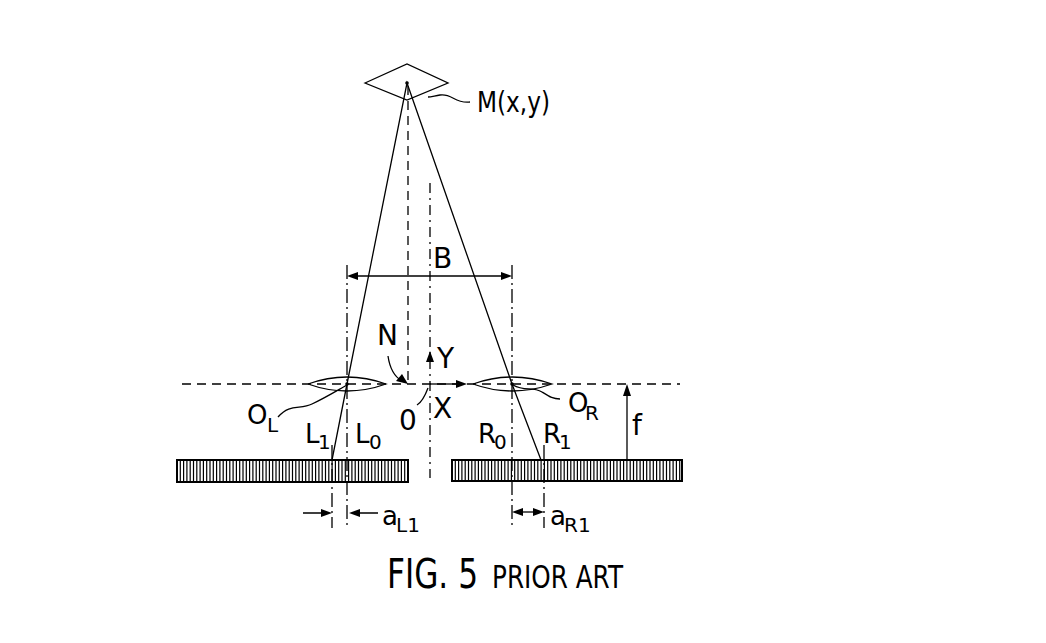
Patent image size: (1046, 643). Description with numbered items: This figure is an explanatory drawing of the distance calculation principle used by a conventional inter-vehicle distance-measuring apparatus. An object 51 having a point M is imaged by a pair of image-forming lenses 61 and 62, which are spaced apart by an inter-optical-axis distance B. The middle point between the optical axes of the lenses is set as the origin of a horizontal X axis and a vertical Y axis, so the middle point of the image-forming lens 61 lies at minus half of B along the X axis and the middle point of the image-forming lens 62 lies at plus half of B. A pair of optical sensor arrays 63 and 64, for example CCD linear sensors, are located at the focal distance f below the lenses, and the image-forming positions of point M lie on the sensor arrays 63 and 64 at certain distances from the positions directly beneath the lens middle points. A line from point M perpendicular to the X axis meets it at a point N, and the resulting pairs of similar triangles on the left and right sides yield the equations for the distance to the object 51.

The object 51 is at (427, 78).
The image-forming lens 61 is at (321, 378).
The image-forming lens 62 is at (531, 373).
The optical sensor array 63 is at (183, 459).
The optical sensor array 64 is at (661, 459).